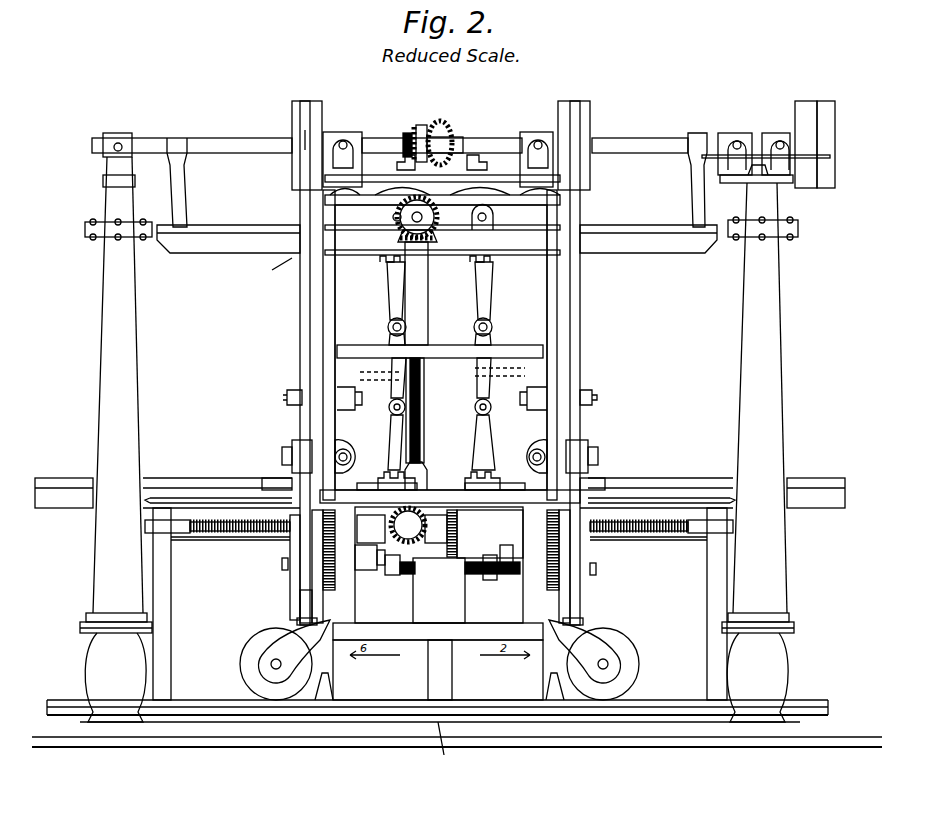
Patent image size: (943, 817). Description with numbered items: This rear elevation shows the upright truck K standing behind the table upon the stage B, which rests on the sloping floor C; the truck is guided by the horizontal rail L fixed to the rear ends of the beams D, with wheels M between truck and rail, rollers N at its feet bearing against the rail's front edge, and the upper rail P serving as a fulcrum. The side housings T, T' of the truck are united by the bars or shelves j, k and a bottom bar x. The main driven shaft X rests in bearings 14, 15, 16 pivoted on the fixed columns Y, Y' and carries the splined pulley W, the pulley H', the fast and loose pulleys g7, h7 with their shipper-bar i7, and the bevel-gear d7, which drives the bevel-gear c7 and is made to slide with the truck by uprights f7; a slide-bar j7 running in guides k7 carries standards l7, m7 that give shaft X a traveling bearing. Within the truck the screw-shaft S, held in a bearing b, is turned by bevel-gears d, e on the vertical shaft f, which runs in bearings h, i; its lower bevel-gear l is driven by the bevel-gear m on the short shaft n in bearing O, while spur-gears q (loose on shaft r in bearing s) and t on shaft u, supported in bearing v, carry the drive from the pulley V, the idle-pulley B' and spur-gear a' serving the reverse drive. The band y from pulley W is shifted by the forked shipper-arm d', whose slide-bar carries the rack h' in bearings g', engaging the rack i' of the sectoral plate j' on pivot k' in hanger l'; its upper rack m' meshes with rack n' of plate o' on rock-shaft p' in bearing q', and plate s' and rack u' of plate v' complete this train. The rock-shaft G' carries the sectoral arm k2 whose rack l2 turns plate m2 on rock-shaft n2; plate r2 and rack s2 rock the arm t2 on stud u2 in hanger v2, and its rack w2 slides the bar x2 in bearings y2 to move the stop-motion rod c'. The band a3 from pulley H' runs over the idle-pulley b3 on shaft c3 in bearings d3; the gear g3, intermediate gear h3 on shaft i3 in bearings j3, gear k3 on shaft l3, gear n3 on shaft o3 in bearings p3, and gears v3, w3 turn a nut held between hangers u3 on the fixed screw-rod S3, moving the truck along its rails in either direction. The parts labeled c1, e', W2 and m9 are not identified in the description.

The bracket 14 is at (118, 133).
The bearing bracket 15 is at (735, 145).
The bearing bracket 16 is at (756, 149).
The shaft X is at (390, 134).
The upright post W is at (317, 363).
The upright post H' is at (582, 363).
The column Y is at (116, 439).
The column Y' is at (760, 452).
The shelf P is at (440, 490).
The frame B is at (440, 604).
The frame bar B' is at (279, 567).
The frame K is at (441, 440).
The frame bar T is at (316, 407).
The frame bar T' is at (564, 407).
The wheel M is at (439, 660).
The pedestal N is at (439, 686).
The base bar L is at (437, 708).
The base C is at (457, 738).
The floor D is at (437, 750).
The screw S3 is at (439, 519).
The beam j7 is at (437, 227).
The hanger l7 is at (177, 182).
The hanger m7 is at (697, 180).
The rod i7 is at (805, 188).
The block g7 is at (806, 144).
The block h7 is at (826, 144).
The pinion c7 is at (406, 133).
The bevel gear d7 is at (422, 133).
The gear c1 is at (445, 132).
The bracket f7 is at (434, 159).
The gear d is at (428, 217).
The bevel gear e is at (429, 240).
The shaft s is at (389, 237).
The pivot v' is at (381, 217).
The bracket G' is at (496, 218).
The lug k2 is at (275, 271).
The column h is at (416, 293).
The rack u' is at (380, 257).
The rack l2 is at (492, 258).
The arm s' is at (396, 303).
The pivot p' is at (373, 327).
The link q' is at (398, 340).
The arm m2 is at (485, 303).
The pivot n2 is at (492, 327).
The cross bar j is at (440, 343).
The rod f is at (419, 410).
The block i is at (419, 476).
The arm l' is at (397, 414).
The pivot k' is at (375, 410).
The arm j' is at (395, 445).
The toothed foot i' is at (396, 474).
The pawl h' is at (369, 471).
The plate g' is at (387, 493).
The arm t2 is at (483, 414).
The arm v2 is at (482, 387).
The pivot u2 is at (491, 407).
The toothed foot y2 is at (495, 487).
The pawl w2 is at (492, 478).
The plate x2 is at (520, 486).
The base plate k is at (450, 495).
The rod n' is at (402, 371).
The rod o' is at (358, 365).
The rod m' is at (354, 378).
The rod r2 is at (504, 365).
The rod s2 is at (525, 376).
The bar y is at (440, 415).
The bracket d' is at (280, 474).
The lug e' is at (305, 476).
The bar a3 is at (603, 600).
The rail c' is at (439, 496).
The lug u is at (278, 566).
The gear b is at (323, 550).
The gear q is at (347, 547).
The gear t is at (336, 575).
The bar a' is at (329, 566).
The block V is at (301, 603).
The gear w3 is at (560, 533).
The gear v3 is at (560, 556).
The shaft c3 is at (537, 584).
The bar b3 is at (580, 582).
The box O is at (371, 529).
The shaft l is at (382, 513).
The gear n is at (408, 525).
The gear m is at (427, 531).
The block S is at (366, 557).
The collar r is at (381, 551).
The block v is at (389, 565).
The block W2 is at (439, 590).
The gear l3 is at (458, 520).
The box m9 is at (490, 534).
The block d3 is at (493, 567).
The block j3 is at (506, 557).
The pin i3 is at (500, 545).
The lever k3 is at (526, 523).
The lever h3 is at (531, 551).
The lug g3 is at (505, 572).
The shaft n3 is at (426, 568).
The collar o3 is at (421, 561).
The rod p3 is at (468, 545).
The shaft u3 is at (404, 587).
The cross bar x is at (438, 631).
The lug k7 is at (596, 214).